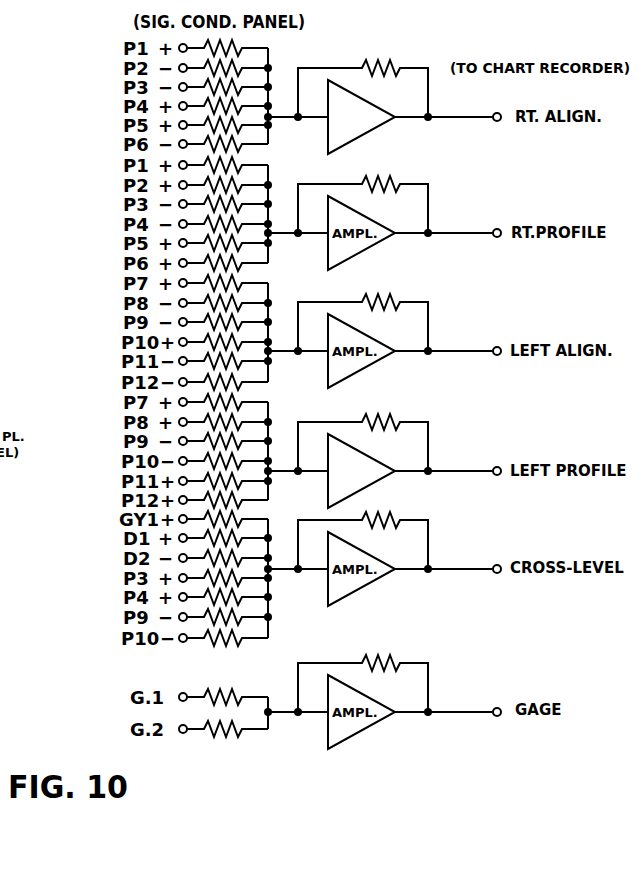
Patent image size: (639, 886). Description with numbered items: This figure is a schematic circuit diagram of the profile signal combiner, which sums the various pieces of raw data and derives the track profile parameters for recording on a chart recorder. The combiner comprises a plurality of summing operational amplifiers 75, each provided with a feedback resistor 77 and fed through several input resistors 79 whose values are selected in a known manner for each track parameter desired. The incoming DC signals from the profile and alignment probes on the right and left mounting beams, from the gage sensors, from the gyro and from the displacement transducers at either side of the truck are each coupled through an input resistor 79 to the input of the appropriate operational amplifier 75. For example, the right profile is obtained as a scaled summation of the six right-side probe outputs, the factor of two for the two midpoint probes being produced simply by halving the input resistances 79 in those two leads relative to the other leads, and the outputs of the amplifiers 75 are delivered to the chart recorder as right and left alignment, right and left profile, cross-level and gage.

The summing operational amplifier 75 is at (357, 130).
The feedback resistor 77 is at (370, 60).
The input resistor 79 is at (272, 67).